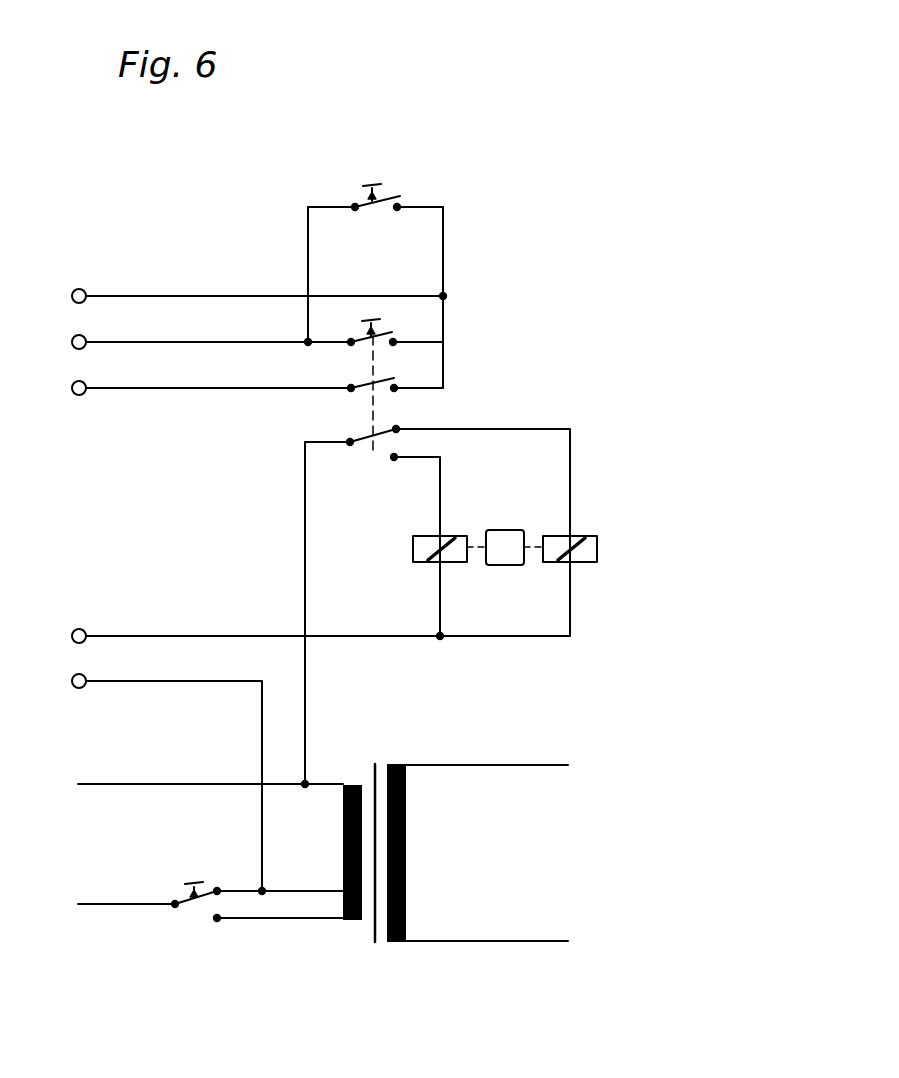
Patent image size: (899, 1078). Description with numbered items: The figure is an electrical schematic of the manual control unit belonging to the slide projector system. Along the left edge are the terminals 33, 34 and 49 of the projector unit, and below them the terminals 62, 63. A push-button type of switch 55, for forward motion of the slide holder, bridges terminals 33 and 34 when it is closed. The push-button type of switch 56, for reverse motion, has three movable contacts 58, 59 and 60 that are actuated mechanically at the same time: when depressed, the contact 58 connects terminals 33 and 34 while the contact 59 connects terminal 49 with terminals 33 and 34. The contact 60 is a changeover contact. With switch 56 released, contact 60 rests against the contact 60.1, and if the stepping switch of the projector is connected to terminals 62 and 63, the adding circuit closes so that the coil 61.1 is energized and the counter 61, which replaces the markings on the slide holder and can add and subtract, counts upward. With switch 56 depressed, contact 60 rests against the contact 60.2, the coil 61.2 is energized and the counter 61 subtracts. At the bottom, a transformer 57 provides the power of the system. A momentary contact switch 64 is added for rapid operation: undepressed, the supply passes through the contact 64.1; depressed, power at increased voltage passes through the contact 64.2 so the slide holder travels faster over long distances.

The terminal 33 is at (73, 290).
The terminal 34 is at (73, 336).
The terminal 49 is at (73, 382).
The push-button type of switch 55 is at (376, 183).
The push-button type of switch 56 is at (378, 325).
The transformer 57 is at (406, 862).
The movable contact 58 is at (364, 347).
The movable contact 59 is at (362, 393).
The movable contact 60 is at (354, 449).
The contact 60.1 is at (398, 425).
The contact 60.2 is at (416, 545).
The counter 61 is at (508, 556).
The coil 61.1 is at (594, 552).
The coil 61.2 is at (416, 552).
The terminal 62 is at (73, 630).
The terminal 63 is at (73, 675).
The momentary contact switch 64 is at (195, 881).
The contact 64.1 is at (218, 887).
The contact 64.2 is at (219, 922).